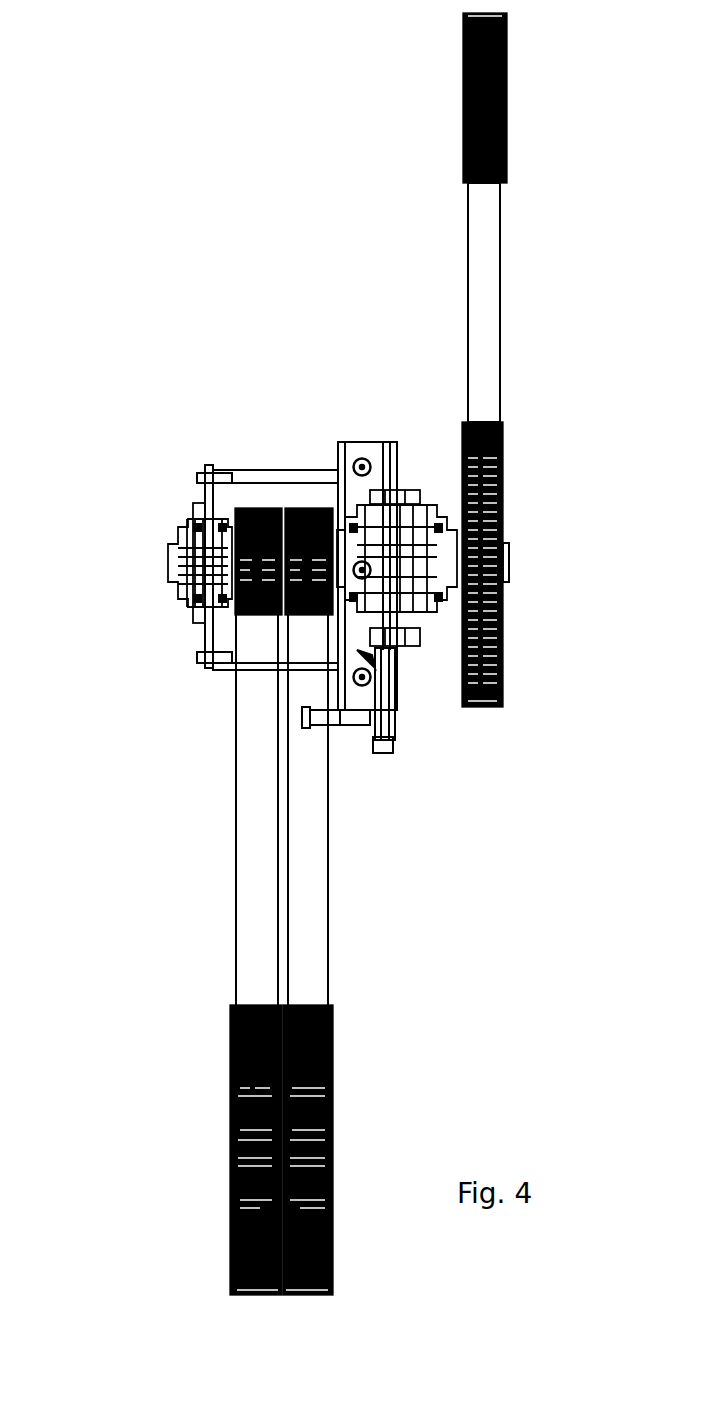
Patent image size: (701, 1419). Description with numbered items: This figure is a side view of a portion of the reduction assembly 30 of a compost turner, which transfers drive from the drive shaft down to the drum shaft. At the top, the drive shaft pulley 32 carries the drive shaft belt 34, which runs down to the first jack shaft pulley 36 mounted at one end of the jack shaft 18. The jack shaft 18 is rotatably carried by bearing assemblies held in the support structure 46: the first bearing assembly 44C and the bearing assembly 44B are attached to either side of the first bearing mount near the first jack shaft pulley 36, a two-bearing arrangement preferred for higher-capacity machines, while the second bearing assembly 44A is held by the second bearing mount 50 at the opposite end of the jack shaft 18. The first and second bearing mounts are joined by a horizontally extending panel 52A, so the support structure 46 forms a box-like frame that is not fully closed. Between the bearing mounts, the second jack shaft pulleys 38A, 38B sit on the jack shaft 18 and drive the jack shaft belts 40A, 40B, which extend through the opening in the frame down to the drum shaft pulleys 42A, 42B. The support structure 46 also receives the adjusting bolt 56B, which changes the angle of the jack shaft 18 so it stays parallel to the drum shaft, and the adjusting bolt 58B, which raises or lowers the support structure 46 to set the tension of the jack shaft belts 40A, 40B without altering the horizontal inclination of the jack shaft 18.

The reduction assembly 30 is at (629, 335).
The drive shaft pulley 32 is at (507, 135).
The drive shaft belt 34 is at (483, 272).
The first jack shaft pulley 36 is at (500, 648).
The jack shaft 18 is at (505, 565).
The second bearing assembly 44A is at (177, 538).
The bearing assembly 44B is at (352, 505).
The first bearing assembly 44C is at (433, 507).
The horizontally extending panel 52A is at (268, 477).
The second bearing mount 50 is at (205, 623).
The second jack shaft pulley 38A is at (237, 615).
The second jack shaft pulley 38B is at (292, 615).
The jack shaft belt 40A is at (255, 900).
The jack shaft belt 40B is at (305, 903).
The drum shaft pulley 42A is at (232, 1087).
The drum shaft pulley 42B is at (333, 1087).
The support structure 46 is at (390, 685).
The adjusting bolt 56B is at (322, 720).
The adjusting bolt 58B is at (391, 753).